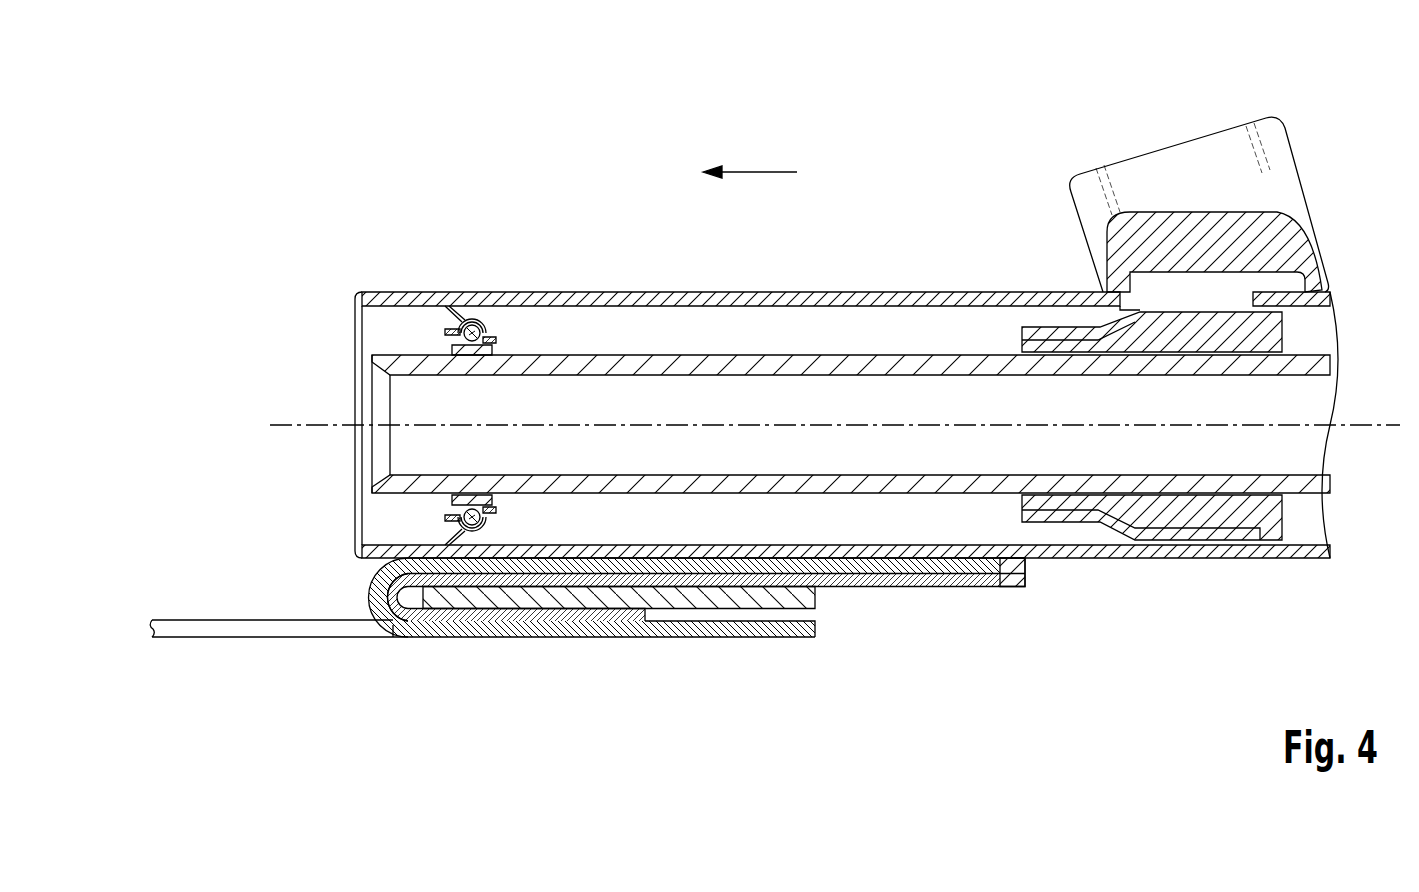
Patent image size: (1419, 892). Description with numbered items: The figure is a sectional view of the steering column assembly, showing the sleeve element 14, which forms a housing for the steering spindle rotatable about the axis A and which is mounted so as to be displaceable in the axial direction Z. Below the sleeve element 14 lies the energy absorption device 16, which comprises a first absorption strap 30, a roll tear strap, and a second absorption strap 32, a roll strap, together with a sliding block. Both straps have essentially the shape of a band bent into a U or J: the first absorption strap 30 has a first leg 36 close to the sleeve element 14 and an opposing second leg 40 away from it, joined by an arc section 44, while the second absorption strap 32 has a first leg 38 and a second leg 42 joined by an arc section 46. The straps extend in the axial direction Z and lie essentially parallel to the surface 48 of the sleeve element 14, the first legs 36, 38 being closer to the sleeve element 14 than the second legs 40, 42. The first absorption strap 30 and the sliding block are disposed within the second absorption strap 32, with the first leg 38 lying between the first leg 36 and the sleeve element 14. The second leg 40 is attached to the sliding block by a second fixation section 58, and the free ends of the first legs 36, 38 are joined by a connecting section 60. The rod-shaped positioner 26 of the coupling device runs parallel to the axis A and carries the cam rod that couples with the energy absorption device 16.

The sleeve element 14 is at (846, 376).
The surface 48 is at (627, 292).
The energy absorption device 16 is at (624, 662).
The positioner 26 is at (235, 628).
The arc section 46 is at (373, 598).
The arc section 44 is at (395, 628).
The first leg 36 is at (958, 586).
The first leg 38 is at (1000, 565).
The first absorption strap 30 is at (917, 585).
The connecting section 60 is at (1030, 572).
The second leg 40 is at (570, 606).
The second fixation section 58 is at (512, 612).
The second leg 42 is at (740, 624).
The second absorption strap 32 is at (780, 638).
The axis A is at (283, 425).
The axial direction Z is at (758, 172).